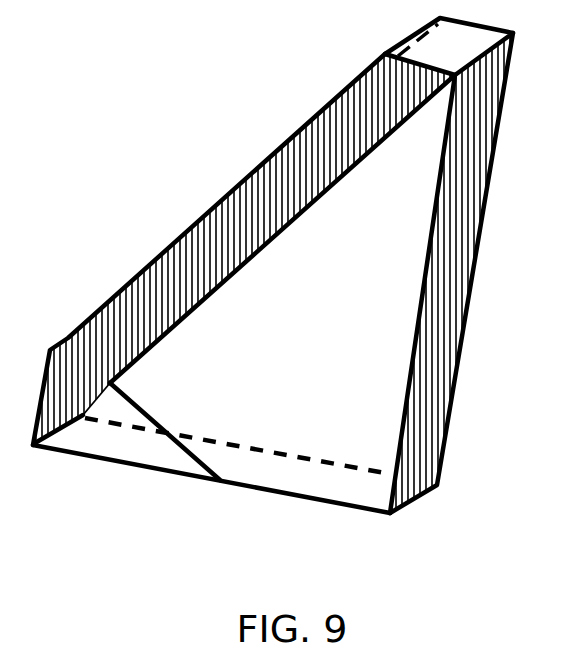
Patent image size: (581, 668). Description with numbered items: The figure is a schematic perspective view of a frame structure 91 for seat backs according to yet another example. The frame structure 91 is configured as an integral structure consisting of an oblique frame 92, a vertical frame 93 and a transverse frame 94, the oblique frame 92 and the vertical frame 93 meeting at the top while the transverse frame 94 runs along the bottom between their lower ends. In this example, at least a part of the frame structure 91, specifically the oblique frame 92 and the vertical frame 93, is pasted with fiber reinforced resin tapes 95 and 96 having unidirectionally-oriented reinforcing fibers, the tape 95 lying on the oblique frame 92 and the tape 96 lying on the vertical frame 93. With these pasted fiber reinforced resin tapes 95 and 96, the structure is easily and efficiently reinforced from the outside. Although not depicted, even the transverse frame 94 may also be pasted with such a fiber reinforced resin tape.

The frame structure 91 is at (268, 98).
The oblique frame 92 is at (200, 212).
The vertical frame 93 is at (488, 205).
The transverse frame 94 is at (280, 478).
The fiber reinforced resin tape 95 is at (138, 303).
The fiber reinforced resin tape 96 is at (440, 336).